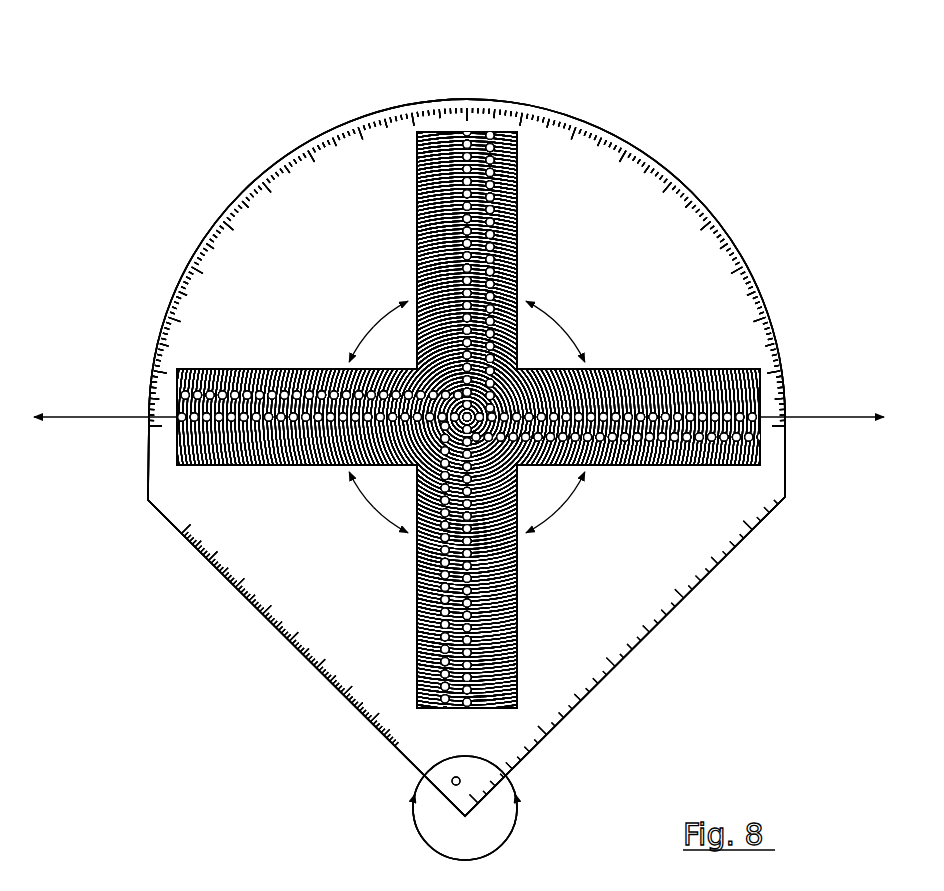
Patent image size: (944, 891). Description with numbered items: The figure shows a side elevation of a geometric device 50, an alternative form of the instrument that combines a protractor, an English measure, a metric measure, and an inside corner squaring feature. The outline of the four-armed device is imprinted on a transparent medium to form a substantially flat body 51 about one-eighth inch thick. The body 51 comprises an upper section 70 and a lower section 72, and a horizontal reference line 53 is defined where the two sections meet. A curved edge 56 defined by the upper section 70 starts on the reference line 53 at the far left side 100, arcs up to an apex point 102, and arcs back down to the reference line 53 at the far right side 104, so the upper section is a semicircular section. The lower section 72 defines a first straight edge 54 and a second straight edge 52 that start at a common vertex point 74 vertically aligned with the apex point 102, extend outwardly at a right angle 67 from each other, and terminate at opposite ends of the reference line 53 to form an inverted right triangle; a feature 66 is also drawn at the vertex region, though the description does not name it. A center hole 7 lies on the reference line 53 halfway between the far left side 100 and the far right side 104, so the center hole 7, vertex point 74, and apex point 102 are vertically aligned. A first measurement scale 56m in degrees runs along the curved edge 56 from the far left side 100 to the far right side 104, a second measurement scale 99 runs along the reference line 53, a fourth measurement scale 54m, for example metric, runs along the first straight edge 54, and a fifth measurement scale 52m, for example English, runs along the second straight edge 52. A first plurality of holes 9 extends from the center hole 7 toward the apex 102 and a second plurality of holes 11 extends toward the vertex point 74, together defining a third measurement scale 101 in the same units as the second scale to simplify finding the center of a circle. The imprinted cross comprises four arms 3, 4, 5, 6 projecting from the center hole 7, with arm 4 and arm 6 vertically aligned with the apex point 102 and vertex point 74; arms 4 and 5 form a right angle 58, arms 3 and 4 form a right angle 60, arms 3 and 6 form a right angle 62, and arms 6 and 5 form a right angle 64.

The arm 3 is at (187, 473).
The arm 4 is at (415, 193).
The arm 5 is at (733, 467).
The arm 6 is at (517, 648).
The center hole 7 is at (467, 417).
The first plurality of holes 9 is at (468, 153).
The second plurality of holes 11 is at (463, 668).
The geometric device 50 is at (748, 128).
The body 51 is at (190, 493).
The second straight edge 52 is at (640, 640).
The fifth measurement scale 52m is at (645, 673).
The horizontal reference line 53 is at (80, 417).
The first straight edge 54 is at (265, 618).
The fourth measurement scale 54m is at (196, 620).
The curved edge 56 is at (205, 248).
The first measurement scale 56m is at (212, 186).
The right angle 58 is at (560, 327).
The right angle 60 is at (373, 330).
The right angle 62 is at (367, 502).
The right angle 64 is at (590, 500).
The pivot circle 66 is at (418, 845).
The right angle 67 is at (457, 753).
The upper section 70 is at (565, 208).
The lower section 72 is at (357, 603).
The vertex point 74 is at (497, 842).
The second measurement scale 99 is at (258, 360).
The far left side 100 is at (148, 417).
The third measurement scale 101 is at (411, 216).
The apex point 102 is at (468, 107).
The far right side 104 is at (785, 412).